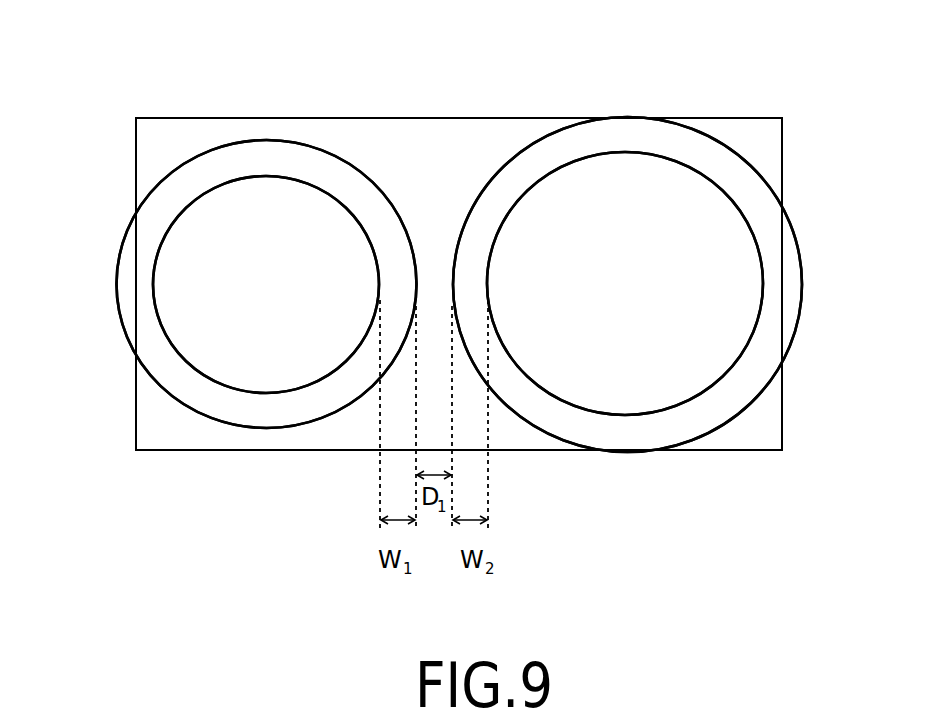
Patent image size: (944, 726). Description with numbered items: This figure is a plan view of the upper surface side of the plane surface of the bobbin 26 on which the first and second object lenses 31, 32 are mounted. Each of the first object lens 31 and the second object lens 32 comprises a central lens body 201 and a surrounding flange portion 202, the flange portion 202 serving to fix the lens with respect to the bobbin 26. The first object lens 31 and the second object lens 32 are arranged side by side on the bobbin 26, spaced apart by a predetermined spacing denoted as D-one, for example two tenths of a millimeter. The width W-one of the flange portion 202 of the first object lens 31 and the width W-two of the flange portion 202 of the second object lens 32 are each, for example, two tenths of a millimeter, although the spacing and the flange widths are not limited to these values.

The bobbin 26 is at (453, 135).
The first object lens 31 is at (224, 150).
The second object lens 32 is at (725, 158).
The lens body 201 is at (177, 280).
The flange portion 202 is at (258, 408).